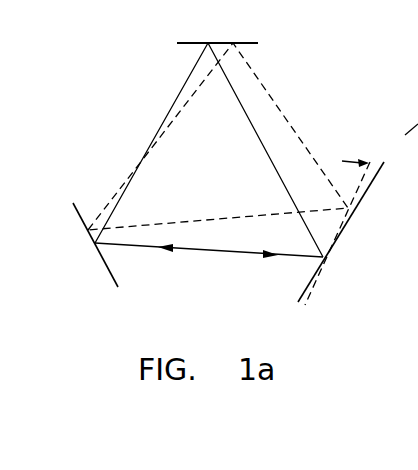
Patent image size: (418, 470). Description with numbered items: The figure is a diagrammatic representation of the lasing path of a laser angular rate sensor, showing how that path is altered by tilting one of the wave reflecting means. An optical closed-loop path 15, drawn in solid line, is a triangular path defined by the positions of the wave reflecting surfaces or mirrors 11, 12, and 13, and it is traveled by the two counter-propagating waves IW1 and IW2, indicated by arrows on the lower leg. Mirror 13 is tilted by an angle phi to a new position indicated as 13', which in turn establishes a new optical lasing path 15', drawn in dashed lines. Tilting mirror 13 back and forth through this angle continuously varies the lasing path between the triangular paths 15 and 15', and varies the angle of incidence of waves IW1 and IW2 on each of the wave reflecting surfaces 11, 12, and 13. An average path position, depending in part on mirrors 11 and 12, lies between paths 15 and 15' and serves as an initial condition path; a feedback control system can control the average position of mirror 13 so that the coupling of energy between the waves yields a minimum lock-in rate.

The wave reflecting surface 11 is at (192, 42).
The wave reflecting surface 12 is at (82, 215).
The wave reflecting surface 13 is at (350, 232).
The tilted mirror position 13' is at (340, 234).
The optical closed-loop path 15 is at (209, 150).
The new optical lasing path 15' is at (219, 136).
The counter-propagating wave IW1 is at (167, 250).
The counter-propagating wave IW2 is at (268, 257).